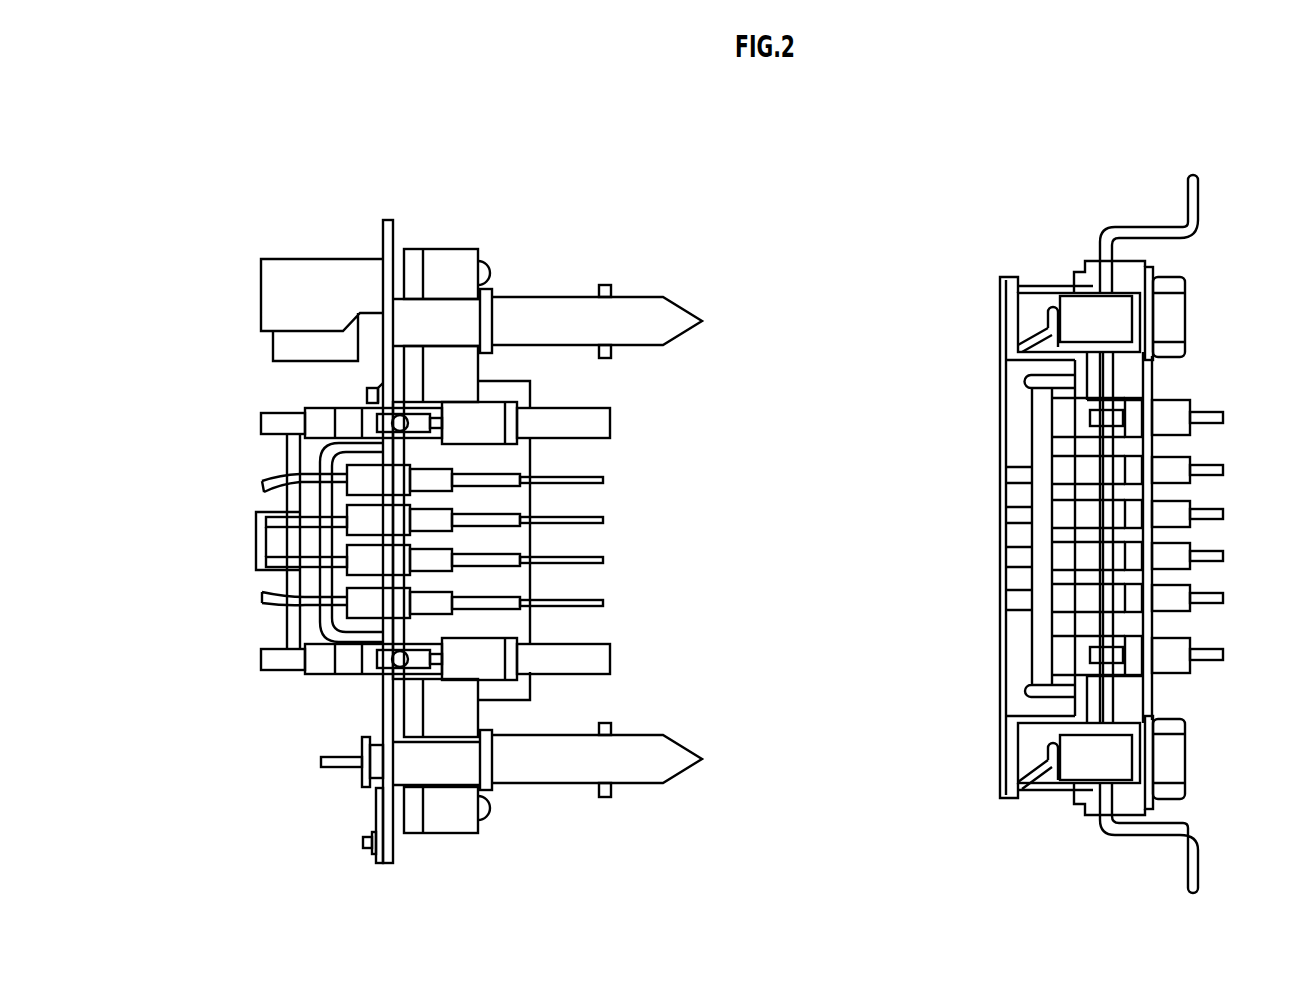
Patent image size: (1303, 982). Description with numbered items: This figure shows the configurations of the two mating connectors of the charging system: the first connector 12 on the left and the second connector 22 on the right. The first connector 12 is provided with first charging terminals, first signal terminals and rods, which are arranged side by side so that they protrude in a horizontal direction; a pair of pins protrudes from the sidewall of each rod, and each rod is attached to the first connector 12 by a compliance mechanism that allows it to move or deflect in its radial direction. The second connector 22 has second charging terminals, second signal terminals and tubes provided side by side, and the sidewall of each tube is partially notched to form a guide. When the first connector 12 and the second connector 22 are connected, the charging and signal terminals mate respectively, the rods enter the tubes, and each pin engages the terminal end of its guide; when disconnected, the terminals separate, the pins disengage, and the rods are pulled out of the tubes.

The first connector 12 is at (414, 173).
The second connector 22 is at (1180, 169).